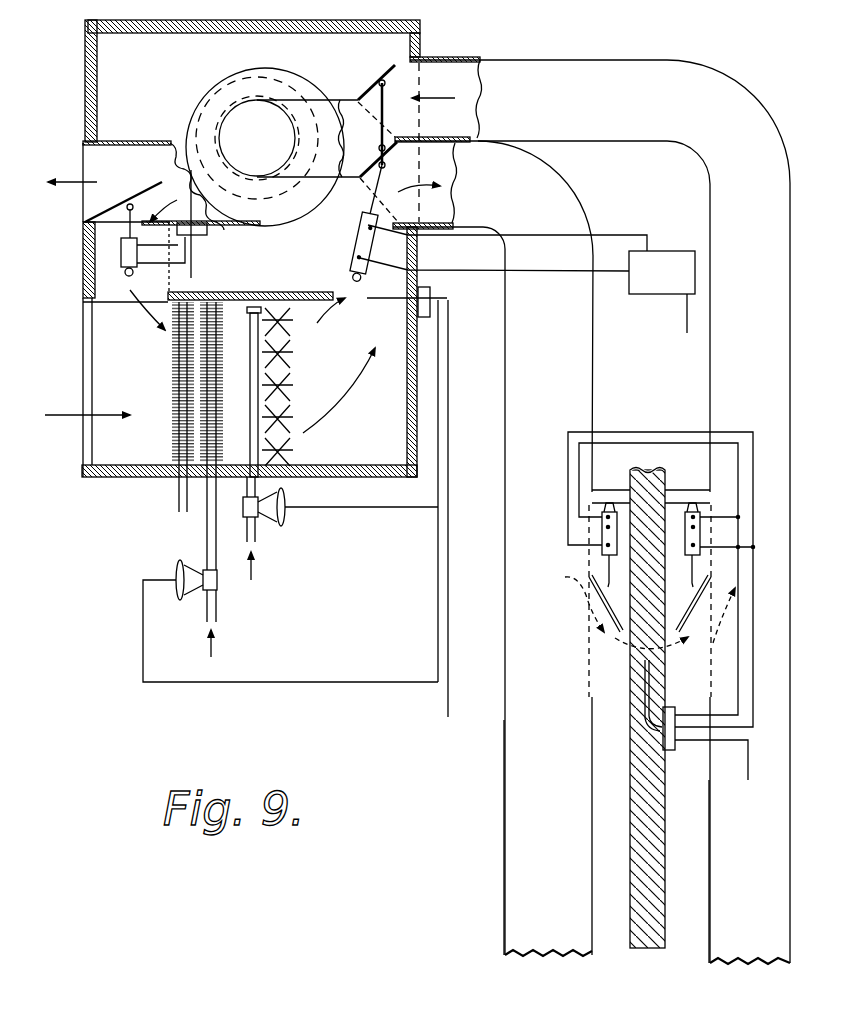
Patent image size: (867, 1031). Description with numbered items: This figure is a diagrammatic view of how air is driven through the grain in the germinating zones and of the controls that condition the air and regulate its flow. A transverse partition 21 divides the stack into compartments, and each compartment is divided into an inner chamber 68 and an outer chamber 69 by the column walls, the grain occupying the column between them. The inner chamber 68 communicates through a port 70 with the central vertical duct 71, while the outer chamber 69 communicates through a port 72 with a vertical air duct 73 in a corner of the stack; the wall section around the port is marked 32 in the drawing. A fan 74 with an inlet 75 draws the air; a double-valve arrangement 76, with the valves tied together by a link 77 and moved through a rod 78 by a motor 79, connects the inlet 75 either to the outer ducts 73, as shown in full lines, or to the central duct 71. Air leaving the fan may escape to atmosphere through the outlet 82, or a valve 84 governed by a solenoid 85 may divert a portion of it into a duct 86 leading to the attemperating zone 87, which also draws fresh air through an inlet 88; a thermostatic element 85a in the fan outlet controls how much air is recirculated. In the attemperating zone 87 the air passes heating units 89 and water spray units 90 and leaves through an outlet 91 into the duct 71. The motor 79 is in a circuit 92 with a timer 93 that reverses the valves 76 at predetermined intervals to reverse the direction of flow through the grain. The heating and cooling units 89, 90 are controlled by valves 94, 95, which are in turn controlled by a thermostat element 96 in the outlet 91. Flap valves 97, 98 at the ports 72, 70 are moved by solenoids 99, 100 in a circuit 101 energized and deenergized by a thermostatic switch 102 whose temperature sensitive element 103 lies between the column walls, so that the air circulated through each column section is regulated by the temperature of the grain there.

The transverse partition 21 is at (700, 462).
The wall opening 32 is at (628, 888).
The inner chamber 68 is at (600, 762).
The outer chamber 69 is at (685, 848).
The port 70 is at (574, 580).
The central vertical duct 71 is at (560, 176).
The port 72 is at (712, 582).
The vertical air duct 73 is at (655, 68).
The fan 74 is at (233, 68).
The fan inlet 75 is at (266, 100).
The double-valve arrangement 76 is at (383, 72).
The link 77 is at (412, 105).
The rod 78 is at (378, 205).
The motor 79 is at (357, 240).
The outlet 82 is at (86, 152).
The valve 84 is at (160, 184).
The solenoid 85 is at (84, 250).
The thermostatic element 85a is at (225, 203).
The duct 86 is at (100, 283).
The attemperating zone 87 is at (140, 385).
The inlet 88 is at (84, 356).
The heating units 89 is at (210, 446).
The water spray units 90 is at (268, 382).
The outlet 91 is at (342, 300).
The circuit 92 is at (560, 242).
The timer 93 is at (680, 251).
The valve 94 is at (220, 588).
The valve 95 is at (262, 520).
The thermostat element 96 is at (368, 300).
The flap valve 97 is at (682, 626).
The flap valve 98 is at (608, 614).
The solenoid 99 is at (702, 528).
The solenoid 100 is at (600, 526).
The circuit 101 is at (662, 433).
The thermostatic switch 102 is at (678, 752).
The temperature sensitive element 103 is at (647, 678).